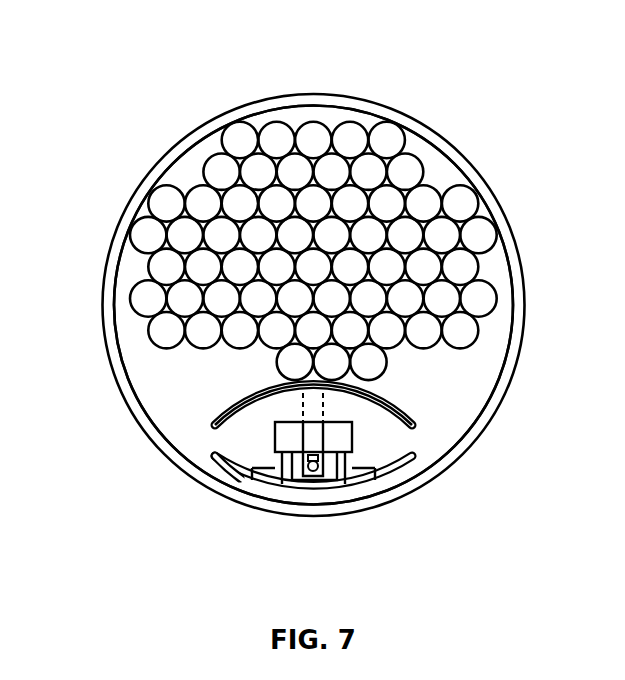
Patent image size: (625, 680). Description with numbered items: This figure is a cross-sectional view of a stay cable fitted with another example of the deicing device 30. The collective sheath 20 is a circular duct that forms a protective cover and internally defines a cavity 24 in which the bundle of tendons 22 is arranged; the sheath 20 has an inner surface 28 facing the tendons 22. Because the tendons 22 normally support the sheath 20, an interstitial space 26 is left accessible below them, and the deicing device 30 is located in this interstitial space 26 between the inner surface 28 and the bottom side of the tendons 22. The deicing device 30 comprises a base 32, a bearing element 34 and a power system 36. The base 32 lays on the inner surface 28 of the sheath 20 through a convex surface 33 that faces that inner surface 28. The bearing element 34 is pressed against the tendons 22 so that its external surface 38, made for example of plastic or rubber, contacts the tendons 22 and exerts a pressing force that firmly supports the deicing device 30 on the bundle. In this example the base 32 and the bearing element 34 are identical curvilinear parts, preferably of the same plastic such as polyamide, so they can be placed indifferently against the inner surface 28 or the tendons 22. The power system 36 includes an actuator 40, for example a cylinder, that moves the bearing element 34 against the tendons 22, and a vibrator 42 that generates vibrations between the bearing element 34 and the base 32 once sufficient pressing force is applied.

The collective sheath 20 is at (490, 185).
The tendons 22 is at (354, 133).
The cavity 24 is at (488, 267).
The interstitial space 26 is at (190, 427).
The inner surface 28 is at (145, 392).
The deicing device 30 is at (386, 492).
The base 32 is at (386, 478).
The convex surface 33 is at (218, 457).
The bearing element 34 is at (418, 424).
The power system 36 is at (343, 470).
The external surface 38 is at (258, 398).
The actuator 40 is at (290, 433).
The vibrator 42 is at (311, 472).